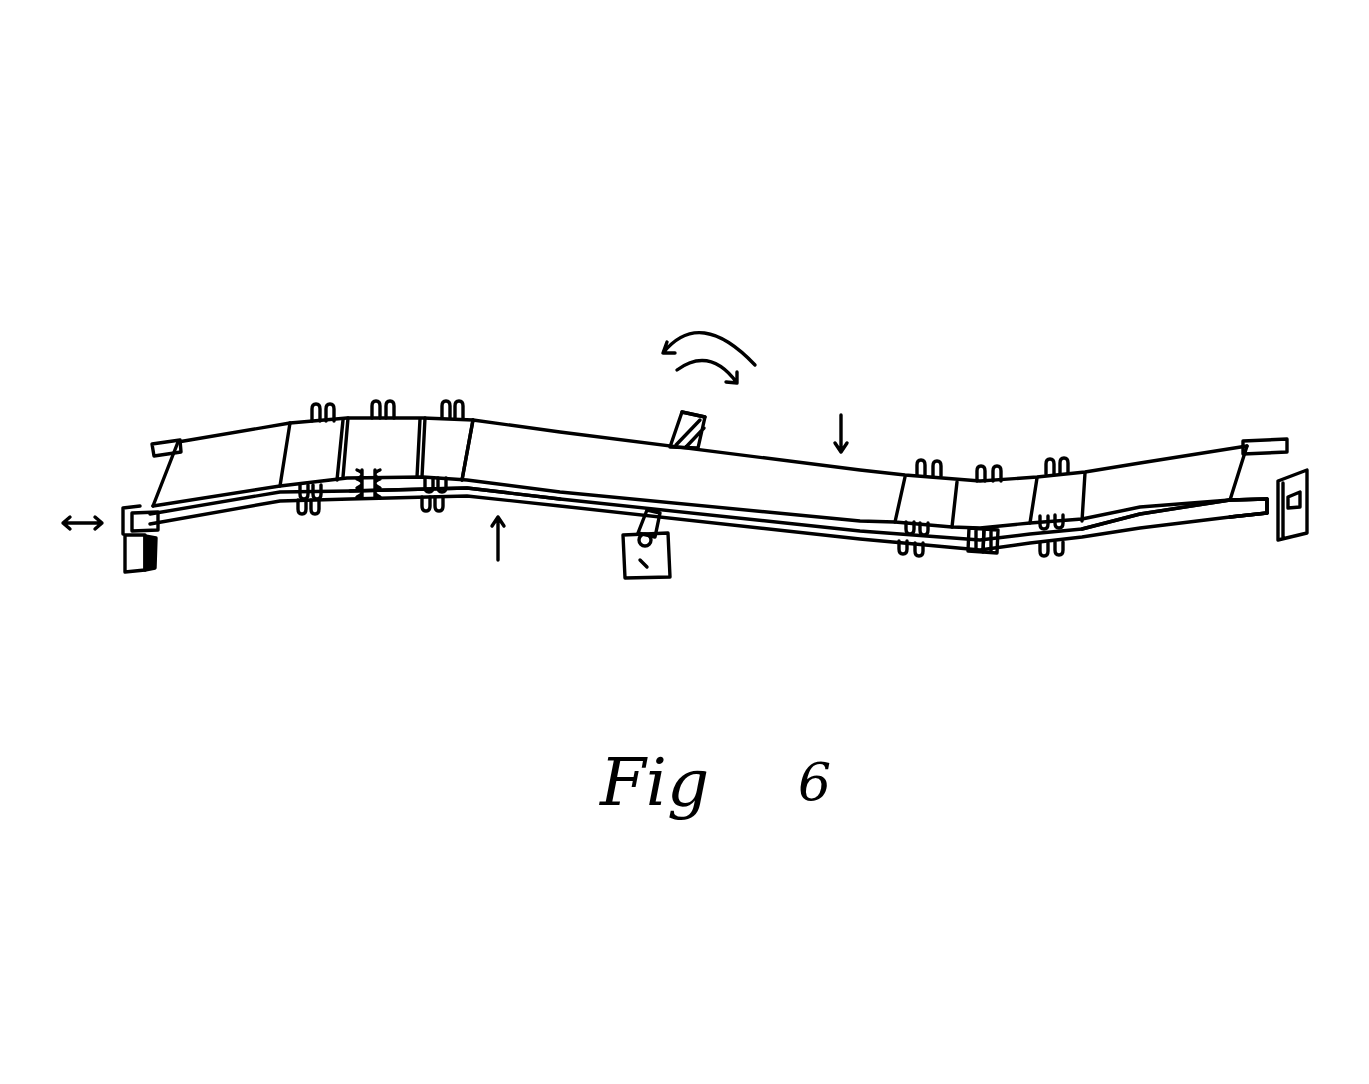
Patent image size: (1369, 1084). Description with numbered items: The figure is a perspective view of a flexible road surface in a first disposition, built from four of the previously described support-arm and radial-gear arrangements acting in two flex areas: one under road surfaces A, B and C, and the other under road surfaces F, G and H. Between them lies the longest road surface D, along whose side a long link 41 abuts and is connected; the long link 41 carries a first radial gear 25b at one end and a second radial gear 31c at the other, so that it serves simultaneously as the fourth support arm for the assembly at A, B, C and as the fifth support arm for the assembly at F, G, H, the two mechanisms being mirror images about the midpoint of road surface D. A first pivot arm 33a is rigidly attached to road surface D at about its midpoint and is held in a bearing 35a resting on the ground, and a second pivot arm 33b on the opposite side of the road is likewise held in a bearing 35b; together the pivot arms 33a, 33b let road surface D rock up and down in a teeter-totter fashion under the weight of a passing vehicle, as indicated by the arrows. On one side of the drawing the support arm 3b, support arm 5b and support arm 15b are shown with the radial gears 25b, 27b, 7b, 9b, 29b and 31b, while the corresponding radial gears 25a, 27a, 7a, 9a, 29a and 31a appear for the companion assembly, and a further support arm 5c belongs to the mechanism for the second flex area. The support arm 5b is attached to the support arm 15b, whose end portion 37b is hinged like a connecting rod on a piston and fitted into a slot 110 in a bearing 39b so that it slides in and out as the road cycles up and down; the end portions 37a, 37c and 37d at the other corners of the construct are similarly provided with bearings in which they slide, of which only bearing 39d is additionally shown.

The support arm 3b is at (845, 538).
The support arm 5b is at (1158, 518).
The rail segment 5c is at (477, 493).
The radial gear 7a is at (997, 465).
The radial gear 7b is at (972, 553).
The radial gear 9a is at (981, 465).
The radial gear 9b is at (988, 553).
The support arm 15b is at (1233, 517).
The radial gear 25a is at (1064, 457).
The radial gear 25b is at (900, 556).
The radial gear 27a is at (1049, 458).
The radial gear 27b is at (923, 557).
The radial gear 29a is at (937, 461).
The radial gear 29b is at (1054, 556).
The radial gear 31a is at (921, 460).
The radial gear 31b is at (1066, 551).
The radial gear 31c is at (467, 477).
The first pivot arm 33a is at (673, 423).
The second pivot arm 33b is at (640, 520).
The bearing 35a is at (707, 433).
The bearing 35b is at (630, 577).
The end portion of support arm 37a is at (1263, 441).
The end portion of support arm 37b is at (1250, 508).
The end portion of support arm 37c is at (150, 512).
The end portion of support arm 37d is at (168, 443).
The bearing 39b is at (1293, 520).
The bearing 39d is at (133, 557).
The long link 41 is at (733, 520).
The slot 110 is at (1297, 490).